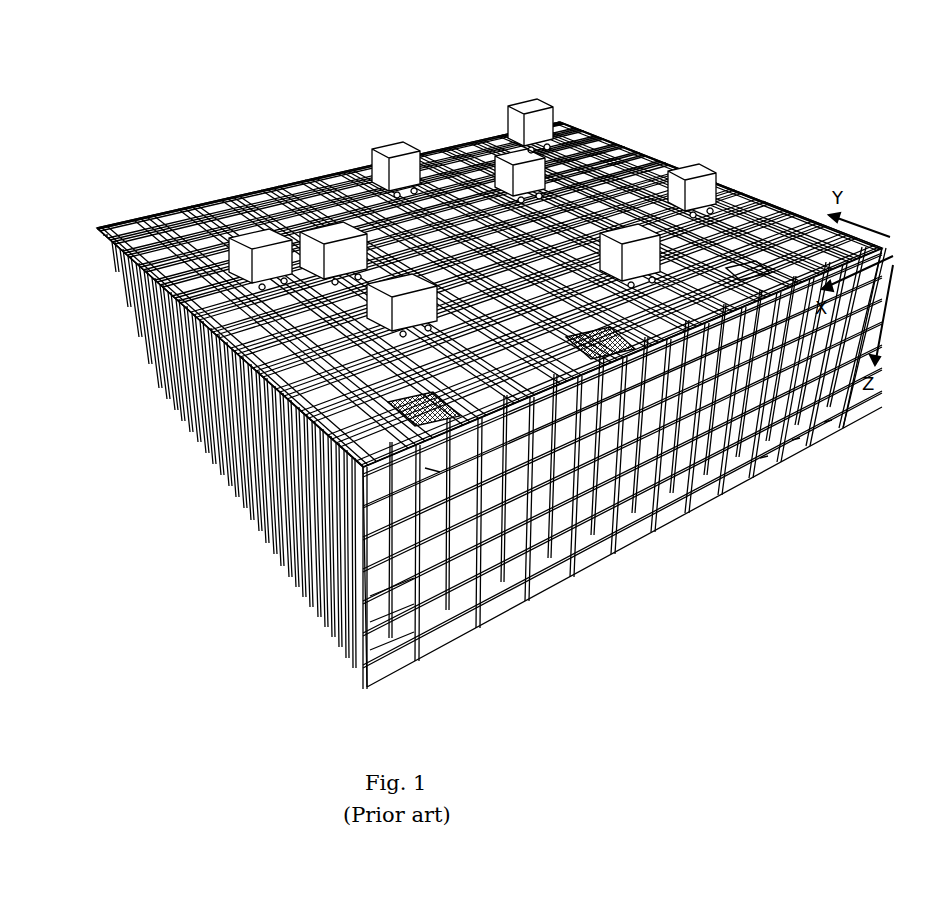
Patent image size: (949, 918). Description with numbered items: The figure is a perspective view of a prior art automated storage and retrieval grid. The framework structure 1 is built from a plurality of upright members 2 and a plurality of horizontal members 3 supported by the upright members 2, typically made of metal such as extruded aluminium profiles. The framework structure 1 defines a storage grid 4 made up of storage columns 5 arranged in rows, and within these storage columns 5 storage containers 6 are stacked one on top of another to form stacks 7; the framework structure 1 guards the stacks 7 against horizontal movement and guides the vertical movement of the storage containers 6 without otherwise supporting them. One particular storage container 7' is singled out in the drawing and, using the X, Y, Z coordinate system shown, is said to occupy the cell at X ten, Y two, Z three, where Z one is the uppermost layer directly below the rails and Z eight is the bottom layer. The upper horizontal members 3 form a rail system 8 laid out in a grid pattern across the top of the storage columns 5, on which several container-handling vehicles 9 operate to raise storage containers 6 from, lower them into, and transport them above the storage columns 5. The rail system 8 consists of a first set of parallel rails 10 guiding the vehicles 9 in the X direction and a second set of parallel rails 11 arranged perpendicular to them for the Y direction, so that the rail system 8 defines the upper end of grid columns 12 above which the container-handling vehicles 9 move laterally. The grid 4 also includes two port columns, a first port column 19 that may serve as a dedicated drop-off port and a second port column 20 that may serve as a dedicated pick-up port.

The framework structure 1 is at (820, 652).
The upright members 2 is at (352, 572).
The horizontal members 3 is at (172, 590).
The storage grid 4 is at (437, 125).
The storage columns 5 is at (270, 480).
The storage containers 6 is at (400, 602).
The stacks 7 is at (804, 492).
The storage container 7' is at (488, 574).
The rail system 8 is at (345, 182).
The container-handling vehicles 9 is at (540, 116).
The first set of parallel rails 10 is at (257, 333).
The second set of parallel rails 11 is at (165, 226).
The grid columns 12 is at (741, 266).
The first port column 19 is at (437, 424).
The second port column 20 is at (603, 337).